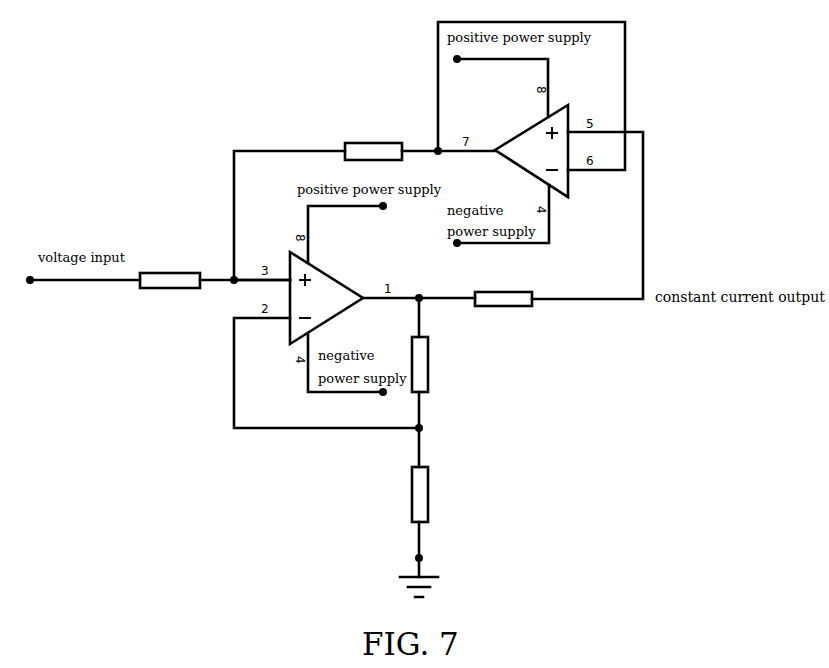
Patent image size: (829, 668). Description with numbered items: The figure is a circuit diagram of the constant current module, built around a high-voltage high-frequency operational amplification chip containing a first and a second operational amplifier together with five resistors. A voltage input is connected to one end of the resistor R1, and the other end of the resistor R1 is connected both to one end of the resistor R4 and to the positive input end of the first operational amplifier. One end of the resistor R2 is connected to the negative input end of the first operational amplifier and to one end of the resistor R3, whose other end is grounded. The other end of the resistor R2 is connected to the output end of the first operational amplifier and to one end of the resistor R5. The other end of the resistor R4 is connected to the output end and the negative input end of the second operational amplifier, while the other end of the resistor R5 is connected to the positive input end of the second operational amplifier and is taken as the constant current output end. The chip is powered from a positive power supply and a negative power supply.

The resistor R1 is at (170, 268).
The resistor R2 is at (436, 364).
The resistor R3 is at (436, 494).
The resistor R4 is at (373, 140).
The resistor R5 is at (502, 287).